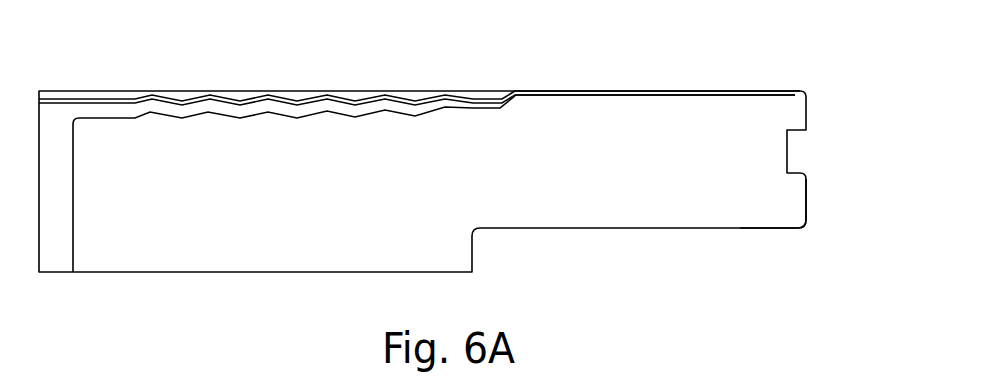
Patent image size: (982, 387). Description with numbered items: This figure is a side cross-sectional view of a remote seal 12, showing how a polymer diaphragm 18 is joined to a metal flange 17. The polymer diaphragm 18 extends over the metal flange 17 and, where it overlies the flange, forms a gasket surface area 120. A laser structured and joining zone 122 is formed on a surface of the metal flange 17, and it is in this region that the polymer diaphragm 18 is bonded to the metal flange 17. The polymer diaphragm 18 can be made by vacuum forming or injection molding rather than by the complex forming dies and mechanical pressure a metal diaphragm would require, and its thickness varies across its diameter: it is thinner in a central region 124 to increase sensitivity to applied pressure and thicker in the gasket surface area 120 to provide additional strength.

The remote seal 12 is at (809, 85).
The metal flange 17 is at (785, 218).
The polymer diaphragm 18 is at (135, 97).
The gasket surface area 120 is at (608, 86).
The laser structured and joining zone 122 is at (658, 95).
The central region 124 is at (70, 95).